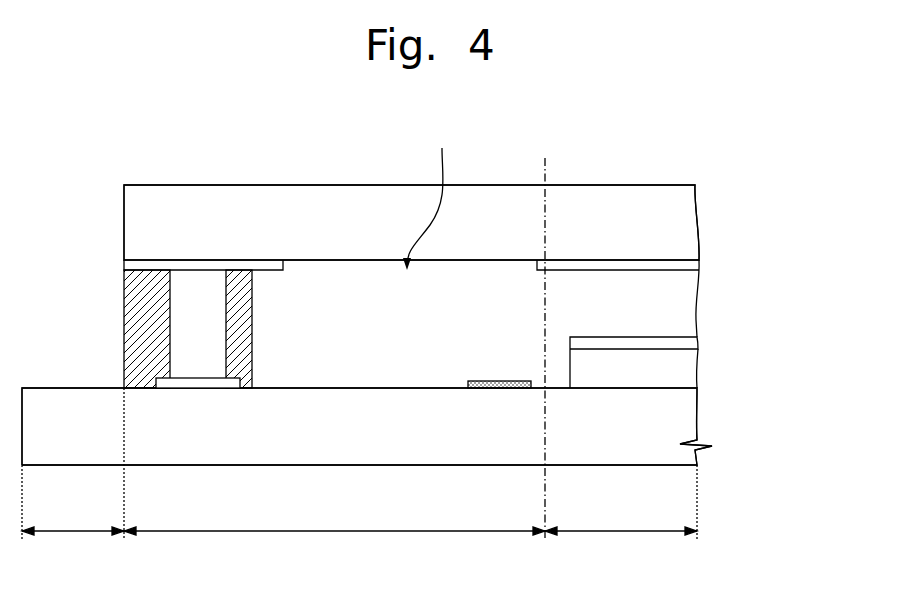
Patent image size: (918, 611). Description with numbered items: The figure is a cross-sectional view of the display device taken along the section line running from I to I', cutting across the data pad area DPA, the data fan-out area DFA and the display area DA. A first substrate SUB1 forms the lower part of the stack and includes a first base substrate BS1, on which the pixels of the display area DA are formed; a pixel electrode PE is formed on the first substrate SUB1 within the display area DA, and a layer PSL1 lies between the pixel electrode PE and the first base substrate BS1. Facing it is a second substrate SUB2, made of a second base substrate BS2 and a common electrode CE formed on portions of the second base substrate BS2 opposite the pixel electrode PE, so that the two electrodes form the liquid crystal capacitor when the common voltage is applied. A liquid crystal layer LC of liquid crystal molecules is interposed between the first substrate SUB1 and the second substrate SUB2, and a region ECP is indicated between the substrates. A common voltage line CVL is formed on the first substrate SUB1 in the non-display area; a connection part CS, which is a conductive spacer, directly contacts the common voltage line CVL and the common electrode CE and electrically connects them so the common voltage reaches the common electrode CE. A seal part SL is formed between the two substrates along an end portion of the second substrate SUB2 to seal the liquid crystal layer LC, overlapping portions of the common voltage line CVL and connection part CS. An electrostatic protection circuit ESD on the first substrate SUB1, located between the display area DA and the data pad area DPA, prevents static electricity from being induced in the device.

The electrically conductive pattern ECP is at (428, 198).
The second base substrate BS2 is at (688, 222).
The common electrode CE is at (690, 265).
The second substrate SUB2 is at (773, 213).
The liquid crystal layer LC is at (688, 305).
The pixel electrode PE is at (690, 343).
The first passivation layer PSL1 is at (688, 370).
The first substrate SUB1 is at (781, 360).
The first base substrate BS1 is at (683, 425).
The seal part SL is at (130, 297).
The connection part CS is at (177, 343).
The common voltage line CVL is at (198, 390).
The electrostatic protection circuit ESD is at (497, 390).
The data pad area DPA is at (73, 542).
The data fan-out area DFA is at (334, 542).
The display area DA is at (621, 542).
The section line start I is at (33, 481).
The section line end I' is at (710, 481).